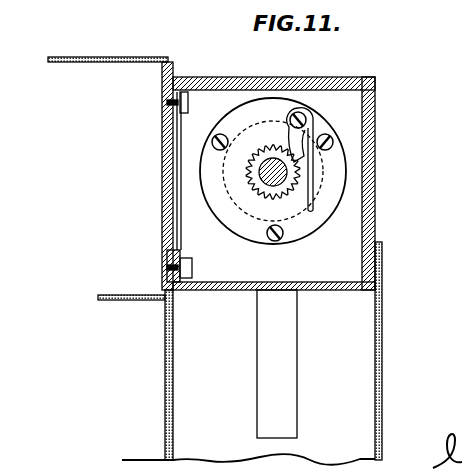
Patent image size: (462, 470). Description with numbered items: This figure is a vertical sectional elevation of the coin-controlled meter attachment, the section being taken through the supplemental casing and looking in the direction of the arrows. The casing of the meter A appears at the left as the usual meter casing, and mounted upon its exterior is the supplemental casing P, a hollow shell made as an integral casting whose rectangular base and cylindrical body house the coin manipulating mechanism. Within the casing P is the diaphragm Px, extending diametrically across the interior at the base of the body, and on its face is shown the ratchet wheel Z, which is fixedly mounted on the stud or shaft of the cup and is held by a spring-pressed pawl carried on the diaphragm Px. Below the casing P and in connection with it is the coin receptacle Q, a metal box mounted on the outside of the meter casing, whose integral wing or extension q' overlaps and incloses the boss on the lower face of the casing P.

The casing of the meter A is at (120, 173).
The supplemental casing P is at (378, 103).
The diaphragm Px is at (241, 224).
The ratchet wheel Z is at (302, 137).
The coin receptacle Q is at (240, 353).
The wing or extension q' is at (277, 364).